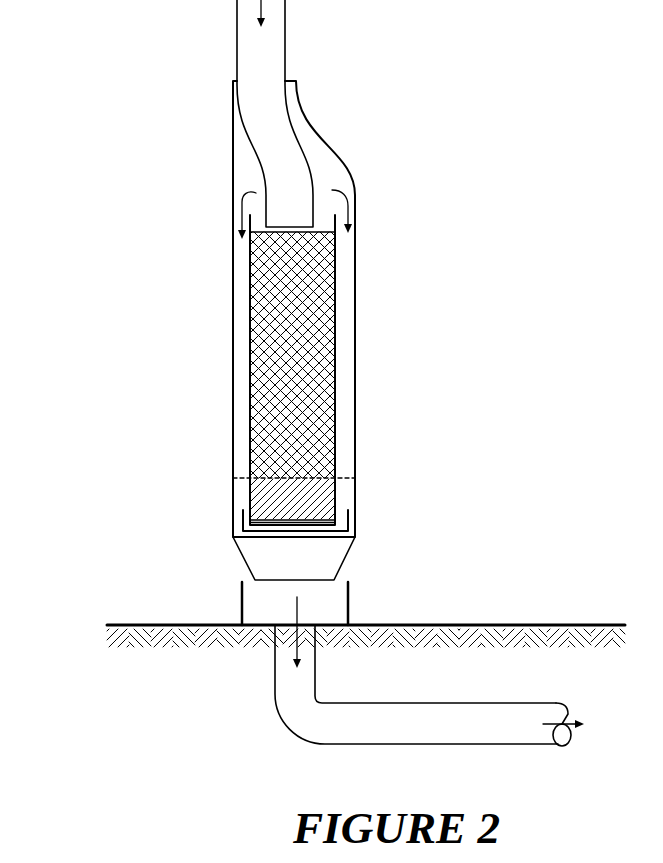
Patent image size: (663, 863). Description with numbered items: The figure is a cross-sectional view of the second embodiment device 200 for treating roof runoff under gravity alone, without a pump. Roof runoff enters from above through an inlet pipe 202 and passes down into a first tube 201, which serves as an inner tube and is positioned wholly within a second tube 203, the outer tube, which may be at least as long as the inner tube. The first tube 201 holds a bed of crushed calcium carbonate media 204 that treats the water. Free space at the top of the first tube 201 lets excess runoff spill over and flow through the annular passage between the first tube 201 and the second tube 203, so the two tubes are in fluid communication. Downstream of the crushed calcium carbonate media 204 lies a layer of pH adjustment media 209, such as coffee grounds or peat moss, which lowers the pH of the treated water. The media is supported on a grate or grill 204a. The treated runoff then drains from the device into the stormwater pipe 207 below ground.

The second embodiment device 200 is at (126, 288).
The first tube 201 is at (336, 362).
The inlet pipe 202 is at (243, 33).
The second tube 203 is at (356, 303).
The crushed calcium carbonate media 204 is at (258, 423).
The grate or grill 204a is at (262, 533).
The stormwater pipe 207 is at (305, 712).
The pH adjustment media 209 is at (268, 502).